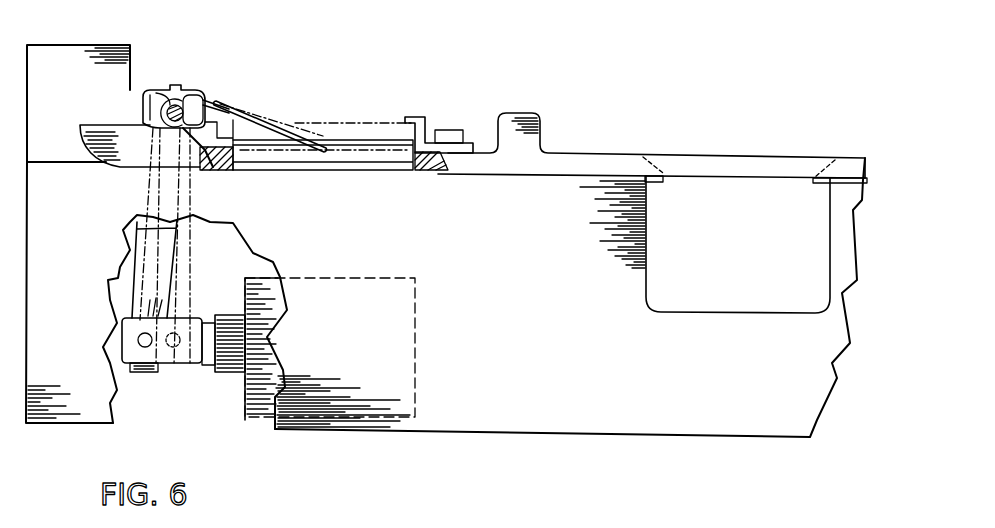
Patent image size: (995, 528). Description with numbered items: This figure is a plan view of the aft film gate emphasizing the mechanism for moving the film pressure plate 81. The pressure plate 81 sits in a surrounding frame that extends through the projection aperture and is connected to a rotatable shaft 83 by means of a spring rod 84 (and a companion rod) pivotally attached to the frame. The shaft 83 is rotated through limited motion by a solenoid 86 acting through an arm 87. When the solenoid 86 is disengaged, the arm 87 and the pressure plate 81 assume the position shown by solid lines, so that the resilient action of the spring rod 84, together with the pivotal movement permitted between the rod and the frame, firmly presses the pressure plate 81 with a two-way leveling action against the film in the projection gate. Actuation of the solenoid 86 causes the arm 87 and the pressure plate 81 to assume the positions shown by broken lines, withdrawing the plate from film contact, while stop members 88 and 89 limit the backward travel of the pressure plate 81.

The pressure plate 81 is at (366, 172).
The rotatable shaft 83 is at (193, 94).
The spring rod 84 is at (280, 123).
The solenoid 86 is at (244, 407).
The arm 87 is at (176, 252).
The stop member 88 is at (412, 117).
The stop member 89 is at (224, 105).